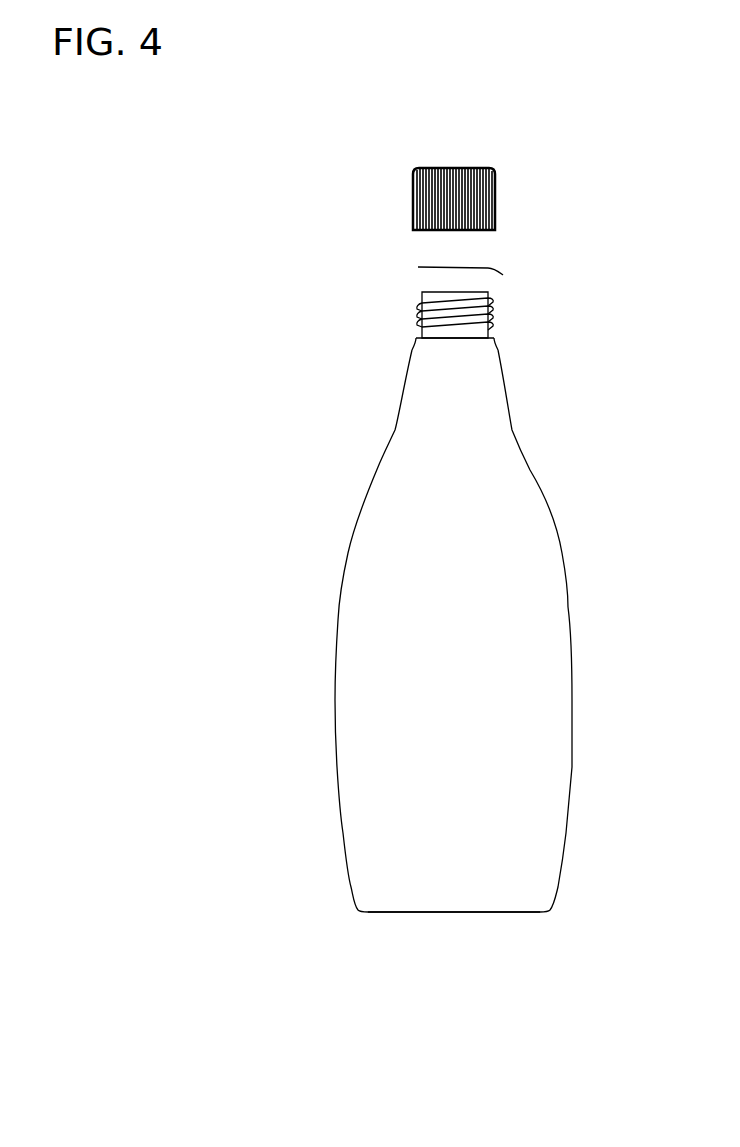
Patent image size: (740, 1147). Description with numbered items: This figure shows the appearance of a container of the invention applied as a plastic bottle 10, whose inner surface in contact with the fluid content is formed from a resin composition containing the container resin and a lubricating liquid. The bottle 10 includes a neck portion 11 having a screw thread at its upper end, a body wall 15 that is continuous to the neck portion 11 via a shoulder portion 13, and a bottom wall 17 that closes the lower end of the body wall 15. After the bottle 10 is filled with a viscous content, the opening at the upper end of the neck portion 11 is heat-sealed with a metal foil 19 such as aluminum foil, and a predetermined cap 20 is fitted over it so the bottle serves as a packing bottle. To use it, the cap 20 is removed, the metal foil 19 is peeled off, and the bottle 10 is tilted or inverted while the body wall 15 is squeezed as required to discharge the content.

The bottle 10 is at (297, 572).
The neck portion 11 is at (505, 317).
The shoulder portion 13 is at (542, 468).
The body wall 15 is at (557, 648).
The bottom wall 17 is at (512, 912).
The metal foil 19 is at (428, 266).
The cap 20 is at (497, 193).